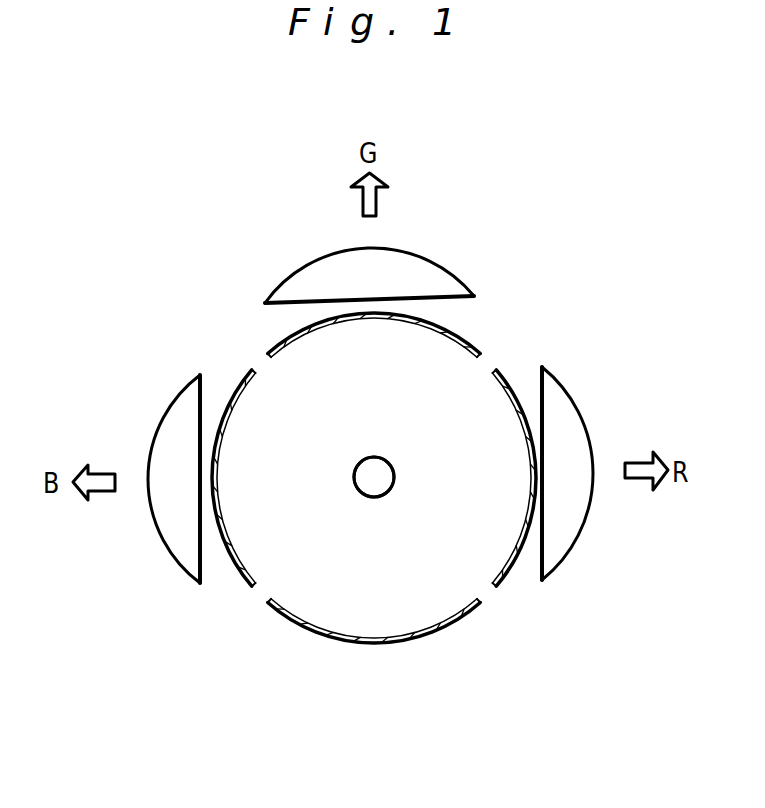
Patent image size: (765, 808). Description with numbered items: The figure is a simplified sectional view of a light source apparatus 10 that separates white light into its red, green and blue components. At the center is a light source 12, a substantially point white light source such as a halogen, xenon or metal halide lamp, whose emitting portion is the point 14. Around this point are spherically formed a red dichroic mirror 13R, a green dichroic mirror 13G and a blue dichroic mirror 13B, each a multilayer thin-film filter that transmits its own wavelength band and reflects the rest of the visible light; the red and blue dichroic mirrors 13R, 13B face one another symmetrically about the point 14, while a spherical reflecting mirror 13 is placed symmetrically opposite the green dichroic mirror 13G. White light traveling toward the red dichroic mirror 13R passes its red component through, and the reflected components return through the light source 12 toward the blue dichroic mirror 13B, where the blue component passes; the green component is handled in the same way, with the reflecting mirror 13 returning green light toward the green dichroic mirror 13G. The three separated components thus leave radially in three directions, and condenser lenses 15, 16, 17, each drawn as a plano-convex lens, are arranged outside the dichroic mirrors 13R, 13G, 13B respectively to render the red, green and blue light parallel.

The light source apparatus 10 is at (125, 198).
The light source 12 is at (360, 468).
The spherical reflecting mirror 13 is at (377, 645).
The green dichroic mirror 13G is at (472, 342).
The red dichroic mirror 13R is at (518, 392).
The blue dichroic mirror 13B is at (232, 393).
The point 14 is at (374, 482).
The condenser lens 15 is at (565, 512).
The condenser lens 16 is at (423, 270).
The condenser lens 17 is at (170, 518).